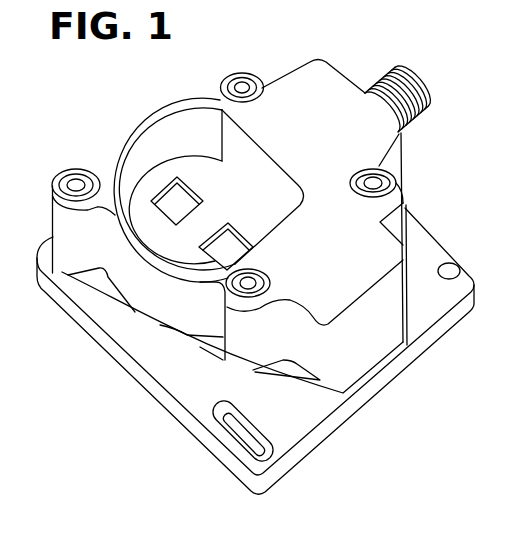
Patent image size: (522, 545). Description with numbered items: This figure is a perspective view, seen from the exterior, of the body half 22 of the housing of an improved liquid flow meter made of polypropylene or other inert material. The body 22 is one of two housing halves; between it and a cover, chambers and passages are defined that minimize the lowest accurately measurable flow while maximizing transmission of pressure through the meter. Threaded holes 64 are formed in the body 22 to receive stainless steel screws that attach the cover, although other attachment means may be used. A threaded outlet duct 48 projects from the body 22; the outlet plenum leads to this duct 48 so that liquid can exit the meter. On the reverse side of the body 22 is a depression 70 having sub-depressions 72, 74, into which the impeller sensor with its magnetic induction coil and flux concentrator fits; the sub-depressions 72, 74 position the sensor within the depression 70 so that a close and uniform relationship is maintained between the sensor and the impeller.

The body half 22 is at (160, 107).
The threaded holes 64 is at (242, 87).
The outlet duct 48 is at (404, 133).
The depression 70 is at (288, 223).
The sub-depression 72 is at (180, 205).
The sub-depression 74 is at (232, 253).